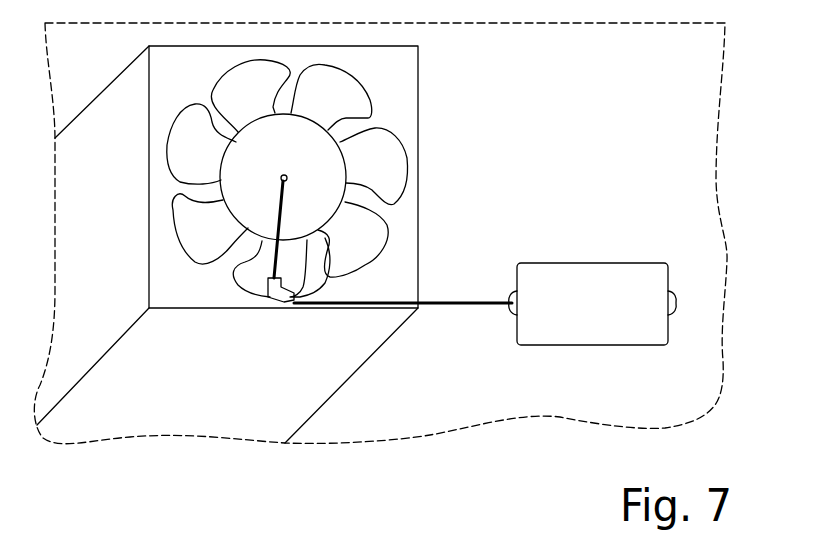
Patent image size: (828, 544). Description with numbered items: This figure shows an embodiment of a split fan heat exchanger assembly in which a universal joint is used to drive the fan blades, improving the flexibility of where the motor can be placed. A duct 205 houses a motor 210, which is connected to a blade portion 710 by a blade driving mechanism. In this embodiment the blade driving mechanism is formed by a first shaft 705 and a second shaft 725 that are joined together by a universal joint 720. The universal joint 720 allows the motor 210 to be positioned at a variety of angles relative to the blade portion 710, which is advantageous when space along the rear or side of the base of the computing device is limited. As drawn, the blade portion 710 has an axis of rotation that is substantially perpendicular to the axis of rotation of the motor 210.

The duct 205 is at (327, 400).
The motor 210 is at (640, 333).
The first shaft 705 is at (460, 305).
The blade portion 710 is at (172, 160).
The universal joint 720 is at (269, 300).
The second shaft 725 is at (285, 184).